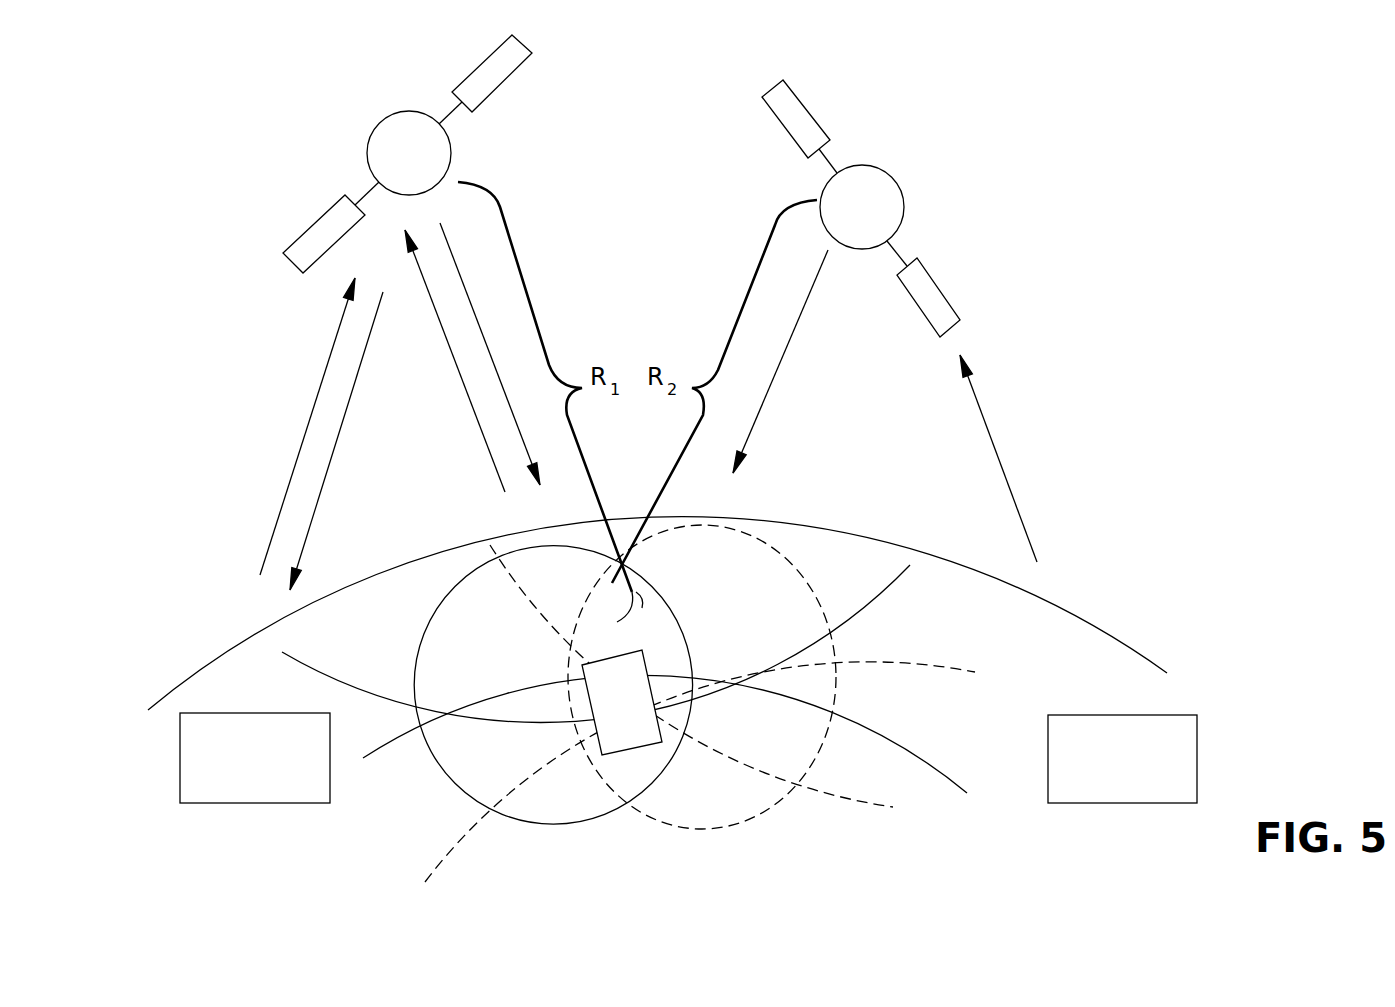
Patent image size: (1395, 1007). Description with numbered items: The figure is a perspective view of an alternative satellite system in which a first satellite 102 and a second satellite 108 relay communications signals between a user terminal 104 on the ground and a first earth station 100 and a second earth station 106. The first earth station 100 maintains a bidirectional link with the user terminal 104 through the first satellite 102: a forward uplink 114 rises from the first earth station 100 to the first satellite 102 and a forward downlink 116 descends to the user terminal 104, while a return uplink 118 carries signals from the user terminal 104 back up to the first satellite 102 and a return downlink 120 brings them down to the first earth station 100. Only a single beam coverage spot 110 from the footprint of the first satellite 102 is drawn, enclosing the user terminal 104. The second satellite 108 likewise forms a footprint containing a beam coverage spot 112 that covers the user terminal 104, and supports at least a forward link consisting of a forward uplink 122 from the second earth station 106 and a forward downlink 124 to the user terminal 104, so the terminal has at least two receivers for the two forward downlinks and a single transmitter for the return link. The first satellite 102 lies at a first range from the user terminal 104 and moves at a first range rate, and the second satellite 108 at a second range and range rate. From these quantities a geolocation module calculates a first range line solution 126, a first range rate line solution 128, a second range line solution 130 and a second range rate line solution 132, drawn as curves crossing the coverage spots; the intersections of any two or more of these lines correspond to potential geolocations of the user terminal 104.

The first earth station 100 is at (245, 803).
The first satellite 102 is at (367, 141).
The user terminal 104 is at (645, 745).
The second earth station 106 is at (1120, 803).
The second satellite 108 is at (888, 171).
The beam coverage spot 110 is at (545, 833).
The beam coverage spot 112 is at (715, 830).
The forward uplink 114 is at (283, 507).
The forward downlink 116 is at (485, 337).
The return uplink 118 is at (470, 408).
The return downlink 120 is at (330, 460).
The forward uplink 122 is at (998, 460).
The forward downlink 124 is at (760, 415).
The first range line solution 126 is at (387, 697).
The first range rate line solution 128 is at (393, 740).
The second range line solution 130 is at (840, 800).
The second range rate line solution 132 is at (910, 663).